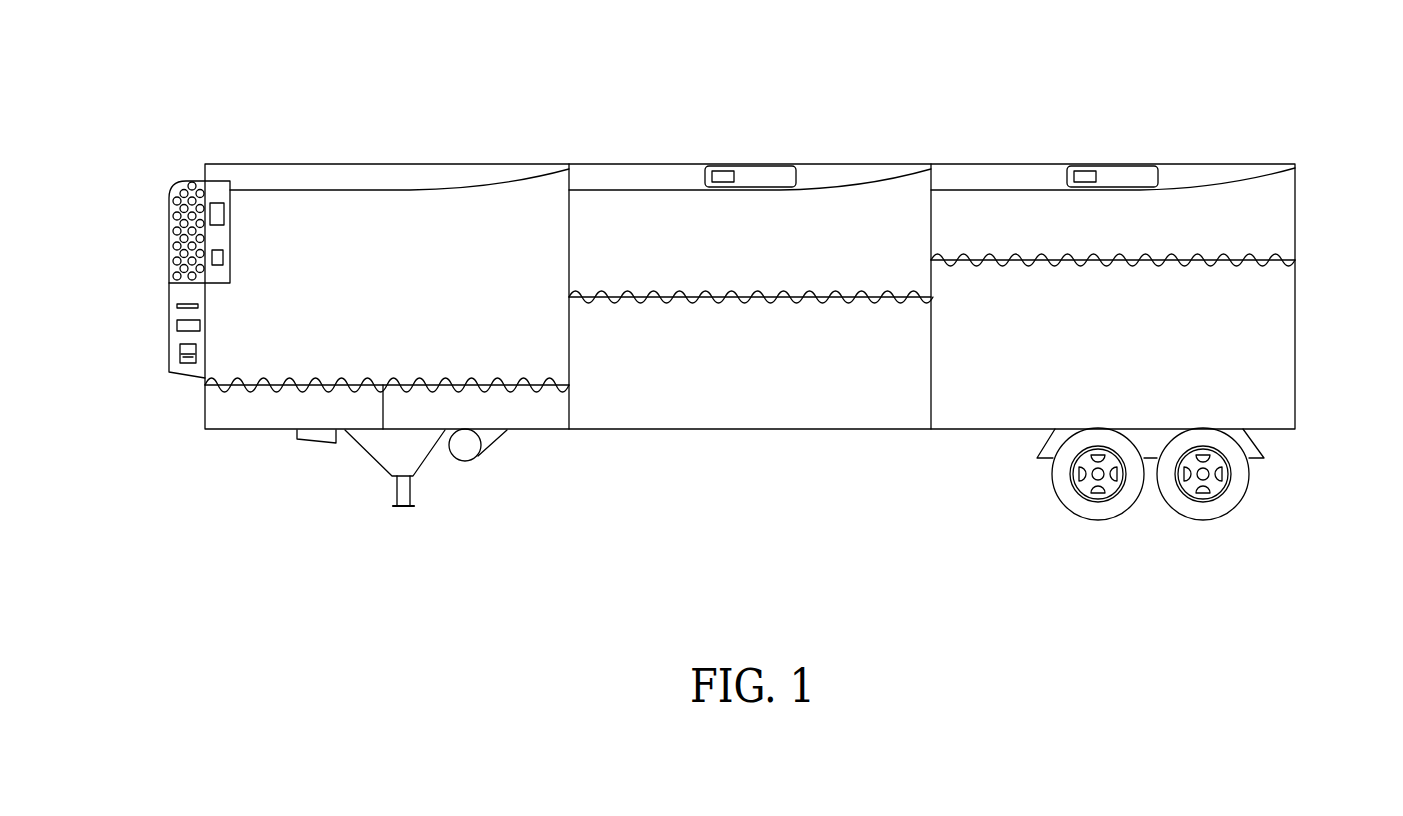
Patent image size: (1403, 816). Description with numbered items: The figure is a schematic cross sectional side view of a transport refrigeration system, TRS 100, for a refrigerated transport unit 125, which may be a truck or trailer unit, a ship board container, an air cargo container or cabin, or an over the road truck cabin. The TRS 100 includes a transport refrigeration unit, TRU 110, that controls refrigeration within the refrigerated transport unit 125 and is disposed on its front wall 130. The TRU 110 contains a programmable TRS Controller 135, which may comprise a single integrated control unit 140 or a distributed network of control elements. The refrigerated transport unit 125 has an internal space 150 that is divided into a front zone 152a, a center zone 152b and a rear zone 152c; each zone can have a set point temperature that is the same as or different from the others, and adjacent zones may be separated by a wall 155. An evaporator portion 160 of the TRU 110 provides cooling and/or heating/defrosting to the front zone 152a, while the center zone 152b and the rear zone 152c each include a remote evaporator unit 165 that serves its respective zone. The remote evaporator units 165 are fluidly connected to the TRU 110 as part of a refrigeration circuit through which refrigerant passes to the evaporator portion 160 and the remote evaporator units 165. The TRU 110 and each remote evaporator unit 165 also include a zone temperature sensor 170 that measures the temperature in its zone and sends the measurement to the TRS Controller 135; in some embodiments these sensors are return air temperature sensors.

The TRS 100 is at (1338, 86).
The TRU 110 is at (179, 182).
The refrigerated transport unit 125 is at (508, 164).
The front wall 130 is at (205, 414).
The TRS Controller 135 is at (160, 300).
The single integrated control unit 140 is at (177, 325).
The internal space 150 is at (680, 410).
The front zone 152a is at (262, 422).
The center zone 152b is at (750, 420).
The rear zone 152c is at (982, 420).
The wall 155 is at (571, 178).
The evaporator portion 160 is at (219, 203).
The remote evaporator unit 165 is at (750, 165).
The zone temperature sensor 170 is at (719, 170).